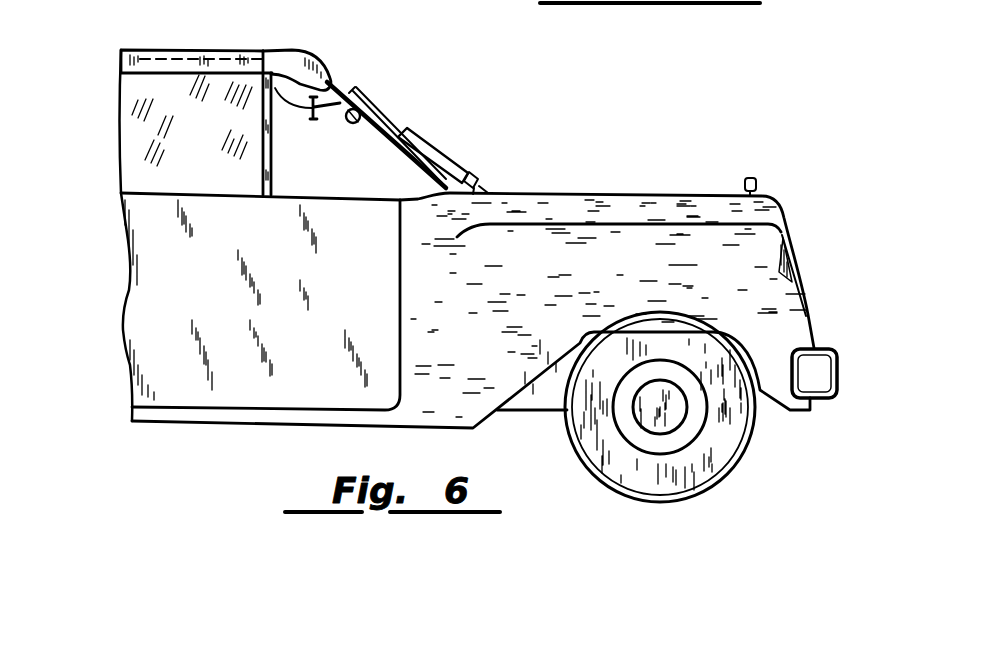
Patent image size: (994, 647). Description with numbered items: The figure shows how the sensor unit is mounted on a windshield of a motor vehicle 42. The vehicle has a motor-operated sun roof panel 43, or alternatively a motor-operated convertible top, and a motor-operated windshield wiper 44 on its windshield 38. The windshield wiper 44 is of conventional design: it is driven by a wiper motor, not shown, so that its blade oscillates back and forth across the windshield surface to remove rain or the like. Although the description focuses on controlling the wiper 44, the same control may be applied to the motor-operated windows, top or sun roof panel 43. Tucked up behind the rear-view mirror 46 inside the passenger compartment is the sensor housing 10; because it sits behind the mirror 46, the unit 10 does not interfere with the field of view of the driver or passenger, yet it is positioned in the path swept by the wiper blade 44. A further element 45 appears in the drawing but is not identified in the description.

The sensor housing 10 is at (354, 122).
The windshield 38 is at (333, 82).
The motor vehicle 42 is at (590, 190).
The motor-operated sun roof panel 43 is at (190, 57).
The windshield wiper 44 is at (385, 112).
The hinge arm 45 is at (310, 72).
The rear-view mirror 46 is at (264, 60).